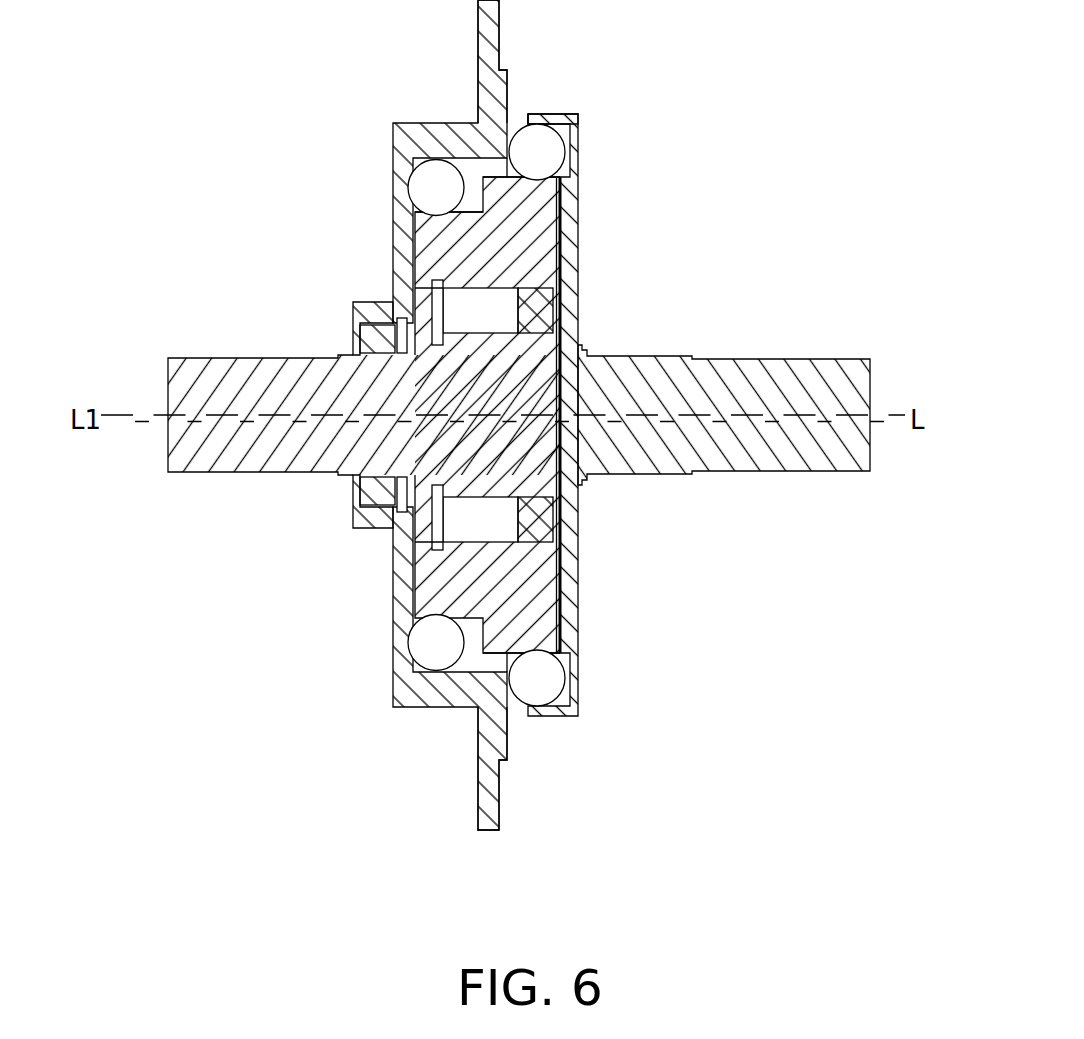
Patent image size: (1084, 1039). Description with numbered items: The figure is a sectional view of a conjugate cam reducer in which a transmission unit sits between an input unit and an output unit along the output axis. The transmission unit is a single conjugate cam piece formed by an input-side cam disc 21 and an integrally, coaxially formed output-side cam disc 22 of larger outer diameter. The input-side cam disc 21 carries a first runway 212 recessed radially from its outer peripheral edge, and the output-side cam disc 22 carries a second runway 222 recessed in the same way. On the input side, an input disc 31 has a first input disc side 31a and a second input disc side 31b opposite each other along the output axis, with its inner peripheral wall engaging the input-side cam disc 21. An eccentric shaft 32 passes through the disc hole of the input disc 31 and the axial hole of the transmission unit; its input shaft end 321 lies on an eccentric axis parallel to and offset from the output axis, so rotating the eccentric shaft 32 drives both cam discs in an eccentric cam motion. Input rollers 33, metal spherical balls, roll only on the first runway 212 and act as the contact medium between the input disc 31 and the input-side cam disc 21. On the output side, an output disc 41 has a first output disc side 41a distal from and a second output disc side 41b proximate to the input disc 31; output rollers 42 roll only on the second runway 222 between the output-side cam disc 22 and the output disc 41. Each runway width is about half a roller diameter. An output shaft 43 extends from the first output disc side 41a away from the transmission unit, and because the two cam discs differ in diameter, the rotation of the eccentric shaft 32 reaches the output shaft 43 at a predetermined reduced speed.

The input-side cam disc 21 is at (437, 265).
The first runway 212 is at (437, 217).
The output-side cam disc 22 is at (550, 242).
The second runway 222 is at (535, 180).
The input disc 31 is at (405, 147).
The first input disc side 31a is at (347, 510).
The second input disc side 31b is at (510, 747).
The eccentric shaft 32 is at (222, 467).
The input shaft end 321 is at (530, 470).
The input rollers 33 is at (418, 192).
The output disc 41 is at (568, 207).
The first output disc side 41a is at (578, 130).
The second output disc side 41b is at (527, 120).
The output rollers 42 is at (548, 158).
The output shaft 43 is at (818, 370).